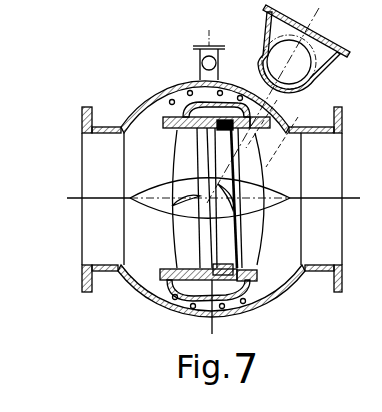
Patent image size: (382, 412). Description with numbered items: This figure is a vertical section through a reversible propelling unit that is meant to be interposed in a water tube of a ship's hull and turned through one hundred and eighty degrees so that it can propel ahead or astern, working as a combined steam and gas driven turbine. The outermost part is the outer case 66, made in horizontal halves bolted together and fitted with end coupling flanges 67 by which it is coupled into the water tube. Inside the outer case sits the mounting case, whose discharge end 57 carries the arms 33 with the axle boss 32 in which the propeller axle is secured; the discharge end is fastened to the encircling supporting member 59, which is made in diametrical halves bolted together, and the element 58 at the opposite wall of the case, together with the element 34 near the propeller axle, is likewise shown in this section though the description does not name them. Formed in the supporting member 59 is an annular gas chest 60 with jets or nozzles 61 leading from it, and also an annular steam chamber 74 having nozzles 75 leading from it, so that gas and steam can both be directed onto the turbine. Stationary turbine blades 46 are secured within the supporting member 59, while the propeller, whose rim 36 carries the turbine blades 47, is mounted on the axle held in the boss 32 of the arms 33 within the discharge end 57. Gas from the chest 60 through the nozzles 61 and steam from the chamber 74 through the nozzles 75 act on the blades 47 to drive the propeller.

The axle boss 32 is at (143, 197).
The arms 33 is at (187, 153).
The stem 34 is at (224, 165).
The rim 36 is at (231, 264).
The stationary turbine blades 46 is at (195, 310).
The turbine blades 47 is at (215, 267).
The discharge end 57 is at (137, 133).
The upper right body wall 58 is at (288, 132).
The encircling supporting member 59 is at (250, 267).
The annular gas chest 60 is at (224, 292).
The jets or nozzles 61 is at (250, 287).
The outer case 66 is at (294, 286).
The end coupling flanges 67 is at (82, 118).
The annular steam chamber 74 is at (262, 116).
The nozzles 75 is at (238, 270).